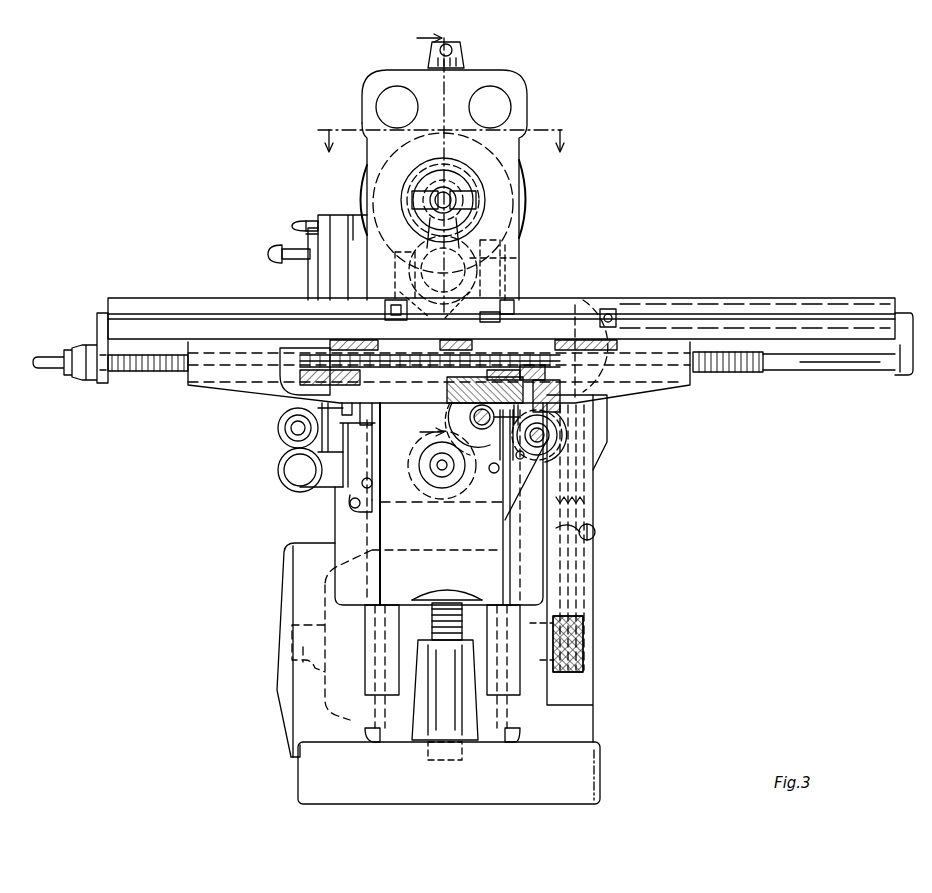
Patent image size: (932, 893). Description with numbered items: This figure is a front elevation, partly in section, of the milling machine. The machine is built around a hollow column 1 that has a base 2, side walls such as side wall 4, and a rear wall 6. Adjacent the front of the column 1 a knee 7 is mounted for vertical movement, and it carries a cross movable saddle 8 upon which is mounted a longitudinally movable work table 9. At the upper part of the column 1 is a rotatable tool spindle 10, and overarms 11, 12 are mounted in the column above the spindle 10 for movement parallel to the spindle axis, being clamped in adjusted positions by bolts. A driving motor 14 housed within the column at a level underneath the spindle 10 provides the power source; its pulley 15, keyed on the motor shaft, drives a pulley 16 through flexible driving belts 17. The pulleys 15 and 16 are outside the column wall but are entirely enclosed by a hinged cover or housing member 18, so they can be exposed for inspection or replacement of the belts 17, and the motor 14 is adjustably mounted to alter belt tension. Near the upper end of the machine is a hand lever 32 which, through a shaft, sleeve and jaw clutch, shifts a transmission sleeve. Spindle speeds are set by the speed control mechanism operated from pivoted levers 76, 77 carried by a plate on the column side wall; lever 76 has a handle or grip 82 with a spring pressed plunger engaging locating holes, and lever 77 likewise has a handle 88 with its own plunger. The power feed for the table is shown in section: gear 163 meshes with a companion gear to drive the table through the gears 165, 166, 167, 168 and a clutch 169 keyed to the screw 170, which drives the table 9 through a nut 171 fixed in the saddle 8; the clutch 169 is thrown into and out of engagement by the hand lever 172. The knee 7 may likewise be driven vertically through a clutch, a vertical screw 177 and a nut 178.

The hollow column 1 is at (512, 158).
The base 2 is at (596, 788).
The side wall 4 is at (422, 233).
The rear wall 6 is at (444, 136).
The knee 7 is at (510, 528).
The saddle 8 is at (662, 382).
The work table 9 is at (680, 304).
The tool spindle 10 is at (470, 184).
The overarm 11 is at (378, 98).
The overarm 12 is at (510, 98).
The driving motor 14 is at (330, 708).
The pulley 15 is at (586, 648).
The pulley 16 is at (582, 312).
The flexible driving belts 17 is at (590, 572).
The cover or housing member 18 is at (589, 503).
The hand lever 32 is at (463, 52).
The pivoted lever 76 is at (314, 224).
The pivoted lever 77 is at (310, 272).
The handle or grip 82 is at (300, 220).
The handle 88 is at (269, 253).
The gear 163 is at (472, 493).
The gear 165 is at (554, 448).
The gear 166 is at (548, 423).
The gear 167 is at (560, 372).
The gear 168 is at (519, 306).
The clutch 169 is at (425, 340).
The screw 170 is at (748, 373).
The nut 171 is at (326, 347).
The hand lever 172 is at (392, 300).
The vertical screw 177 is at (420, 613).
The nut 178 is at (472, 658).